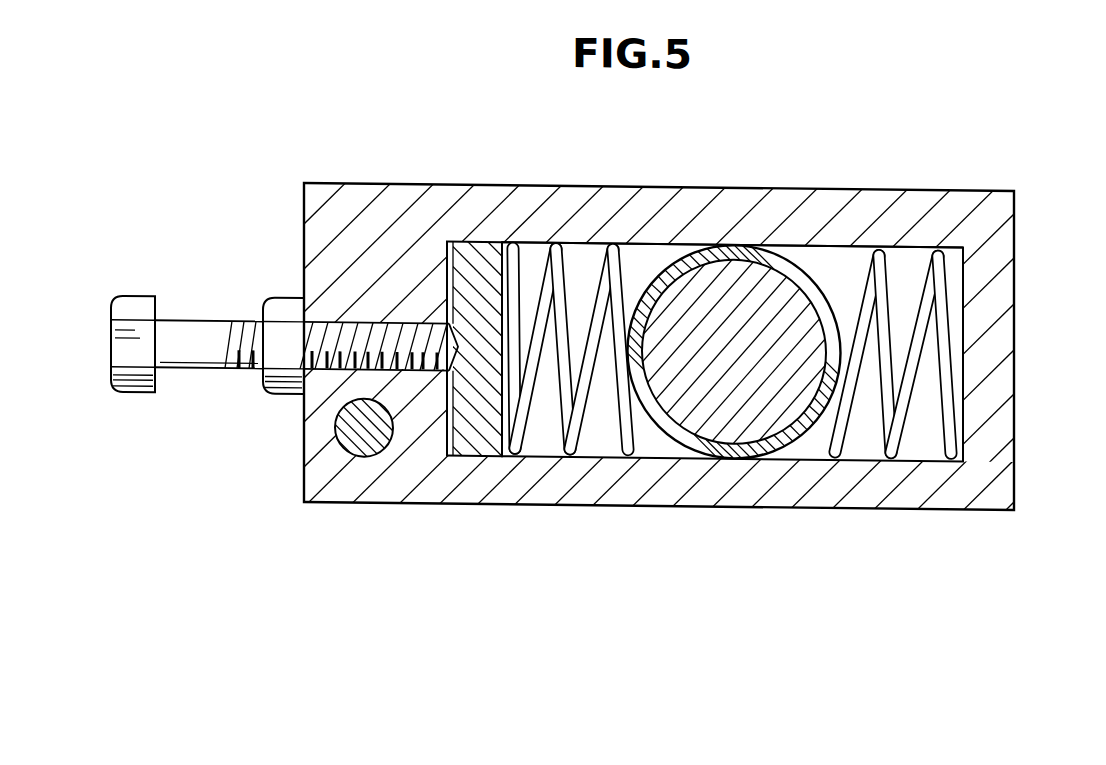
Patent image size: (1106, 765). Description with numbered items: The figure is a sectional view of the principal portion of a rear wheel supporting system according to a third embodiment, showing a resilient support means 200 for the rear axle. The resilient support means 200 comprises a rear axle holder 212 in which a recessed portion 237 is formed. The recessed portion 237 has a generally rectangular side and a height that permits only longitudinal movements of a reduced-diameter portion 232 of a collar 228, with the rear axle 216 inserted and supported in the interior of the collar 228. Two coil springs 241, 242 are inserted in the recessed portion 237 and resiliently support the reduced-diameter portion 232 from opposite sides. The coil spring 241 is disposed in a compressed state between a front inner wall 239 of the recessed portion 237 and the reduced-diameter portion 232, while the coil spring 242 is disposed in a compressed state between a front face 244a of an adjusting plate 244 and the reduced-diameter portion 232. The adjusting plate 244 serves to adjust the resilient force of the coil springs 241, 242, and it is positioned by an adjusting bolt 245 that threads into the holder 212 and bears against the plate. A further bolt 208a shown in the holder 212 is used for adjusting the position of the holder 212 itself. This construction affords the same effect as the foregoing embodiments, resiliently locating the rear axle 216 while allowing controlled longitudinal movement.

The resilient support means 200 is at (561, 376).
The rear axle holder 212 is at (853, 206).
The recessed portion 237 is at (830, 254).
The front inner wall 239 is at (962, 295).
The adjusting bolt 245 is at (330, 336).
The bolt 208a is at (345, 429).
The adjusting plate 244 is at (479, 452).
The front face 244a is at (513, 282).
The coil spring 242 is at (573, 434).
The coil spring 241 is at (840, 447).
The collar 228 is at (734, 298).
The reduced-diameter portion 232 is at (683, 267).
The rear axle 216 is at (747, 284).